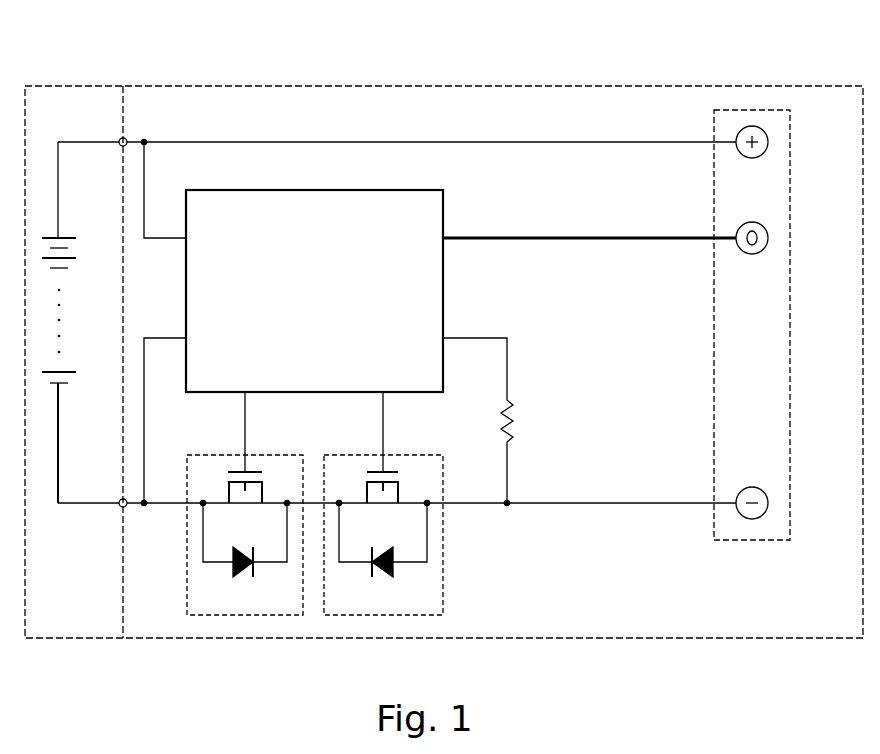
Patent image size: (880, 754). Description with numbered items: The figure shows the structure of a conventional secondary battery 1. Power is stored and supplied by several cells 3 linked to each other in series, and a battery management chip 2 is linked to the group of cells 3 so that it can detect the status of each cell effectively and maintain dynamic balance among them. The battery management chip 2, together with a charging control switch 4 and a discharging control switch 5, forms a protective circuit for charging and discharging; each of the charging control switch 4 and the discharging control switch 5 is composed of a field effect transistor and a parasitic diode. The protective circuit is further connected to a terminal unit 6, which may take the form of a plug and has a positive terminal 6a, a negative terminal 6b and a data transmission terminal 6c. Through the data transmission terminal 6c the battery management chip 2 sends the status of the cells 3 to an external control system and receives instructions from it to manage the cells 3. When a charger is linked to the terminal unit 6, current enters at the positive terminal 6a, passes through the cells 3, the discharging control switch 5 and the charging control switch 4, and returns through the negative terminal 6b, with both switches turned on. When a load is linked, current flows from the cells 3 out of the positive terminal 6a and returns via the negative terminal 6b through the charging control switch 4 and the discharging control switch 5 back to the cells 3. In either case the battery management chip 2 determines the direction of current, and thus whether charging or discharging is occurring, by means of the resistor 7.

The secondary battery 1 is at (486, 86).
The battery management chip 2 is at (313, 190).
The cells 3 is at (72, 383).
The charging control switch 4 is at (392, 455).
The discharging control switch 5 is at (255, 455).
The terminal unit 6 is at (771, 353).
The positive terminal 6a is at (768, 142).
The negative terminal 6b is at (768, 503).
The data transmission terminal 6c is at (768, 238).
The resistor 7 is at (507, 402).